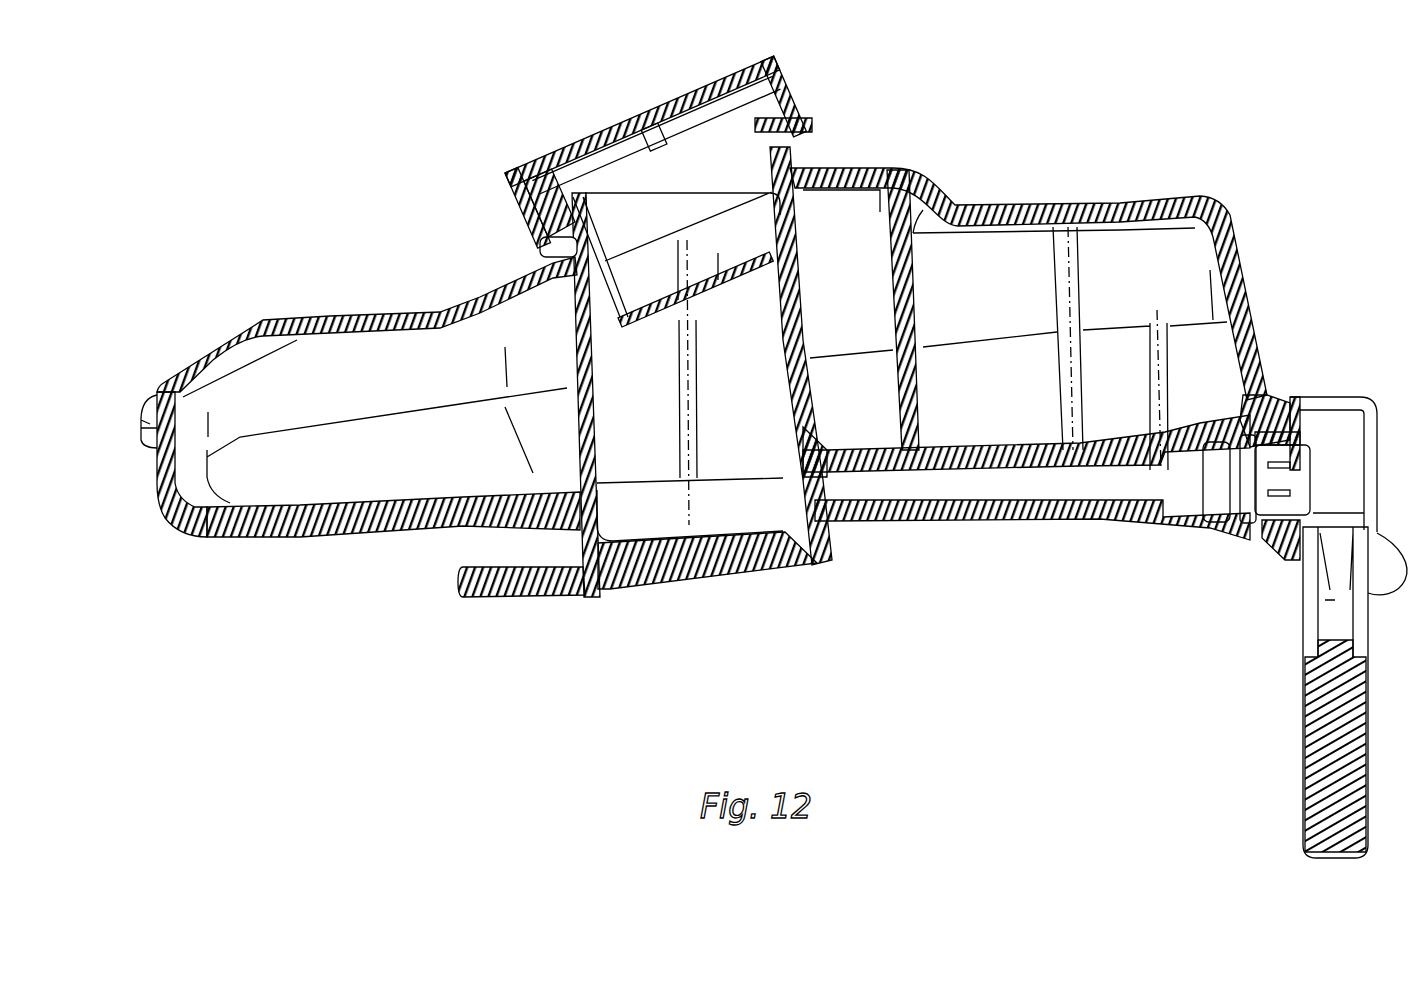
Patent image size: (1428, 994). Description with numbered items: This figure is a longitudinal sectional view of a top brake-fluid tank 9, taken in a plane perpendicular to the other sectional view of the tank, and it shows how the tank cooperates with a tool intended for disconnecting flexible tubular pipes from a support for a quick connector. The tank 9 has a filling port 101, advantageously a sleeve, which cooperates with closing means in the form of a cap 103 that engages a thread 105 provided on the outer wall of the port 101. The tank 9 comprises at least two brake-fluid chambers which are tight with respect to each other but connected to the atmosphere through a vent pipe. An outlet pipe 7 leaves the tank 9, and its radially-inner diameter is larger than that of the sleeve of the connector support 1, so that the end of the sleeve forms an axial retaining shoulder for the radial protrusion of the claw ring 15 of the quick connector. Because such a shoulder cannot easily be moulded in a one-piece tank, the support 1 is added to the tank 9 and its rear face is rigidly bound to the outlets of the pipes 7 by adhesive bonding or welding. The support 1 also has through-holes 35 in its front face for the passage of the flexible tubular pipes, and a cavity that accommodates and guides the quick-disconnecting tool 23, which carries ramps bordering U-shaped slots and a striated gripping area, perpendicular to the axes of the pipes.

The connector support 1 is at (1365, 393).
The outlet pipe 7 is at (1000, 490).
The tank 9 is at (1038, 189).
The claw ring 15 is at (1312, 434).
The quick-disconnecting tool 23 is at (1300, 780).
The through-holes 35 is at (1367, 478).
The filling port 101 is at (724, 165).
The cap 103 is at (696, 91).
The thread 105 is at (520, 229).